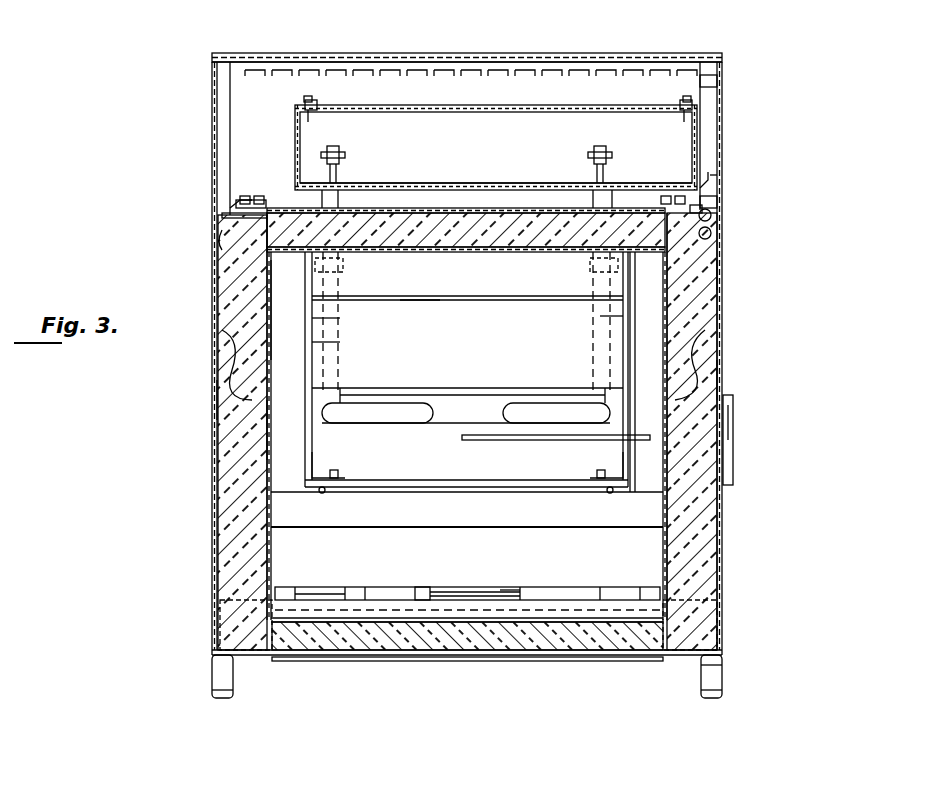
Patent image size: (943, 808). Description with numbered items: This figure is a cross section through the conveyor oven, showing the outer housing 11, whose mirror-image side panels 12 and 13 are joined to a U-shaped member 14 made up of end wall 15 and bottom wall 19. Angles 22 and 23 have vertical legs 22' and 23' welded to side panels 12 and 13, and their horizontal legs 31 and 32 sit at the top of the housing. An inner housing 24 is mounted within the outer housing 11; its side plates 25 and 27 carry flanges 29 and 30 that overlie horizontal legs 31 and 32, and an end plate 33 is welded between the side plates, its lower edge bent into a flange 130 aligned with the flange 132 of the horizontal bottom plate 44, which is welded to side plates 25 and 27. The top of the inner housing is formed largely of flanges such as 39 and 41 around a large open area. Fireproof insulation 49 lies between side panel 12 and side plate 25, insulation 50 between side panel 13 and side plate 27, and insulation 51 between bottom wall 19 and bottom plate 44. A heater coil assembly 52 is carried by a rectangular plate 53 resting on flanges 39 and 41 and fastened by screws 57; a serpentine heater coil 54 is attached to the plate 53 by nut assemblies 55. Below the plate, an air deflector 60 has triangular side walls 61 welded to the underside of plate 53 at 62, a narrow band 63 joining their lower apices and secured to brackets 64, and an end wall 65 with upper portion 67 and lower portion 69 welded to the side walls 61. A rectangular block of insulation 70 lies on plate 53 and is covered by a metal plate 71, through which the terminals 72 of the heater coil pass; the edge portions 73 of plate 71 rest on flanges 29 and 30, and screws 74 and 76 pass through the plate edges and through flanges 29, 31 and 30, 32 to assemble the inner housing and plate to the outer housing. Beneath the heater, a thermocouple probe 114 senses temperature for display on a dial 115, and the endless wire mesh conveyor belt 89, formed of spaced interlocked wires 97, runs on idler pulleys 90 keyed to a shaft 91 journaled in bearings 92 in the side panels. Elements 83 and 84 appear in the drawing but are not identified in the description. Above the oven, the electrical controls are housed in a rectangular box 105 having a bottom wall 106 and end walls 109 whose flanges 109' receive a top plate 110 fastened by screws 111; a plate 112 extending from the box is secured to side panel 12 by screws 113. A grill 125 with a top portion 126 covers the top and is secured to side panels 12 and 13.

The outer housing 11 is at (212, 98).
The side panel 12 is at (722, 515).
The side panel 13 is at (212, 489).
The U-shaped member 14 is at (236, 660).
The end wall 15 is at (226, 358).
The bottom wall 19 is at (268, 658).
The angle 22 is at (749, 226).
The vertical leg 22' is at (754, 244).
The angle 23 is at (404, 220).
The vertical leg 23' is at (182, 250).
The inner housing 24 is at (312, 344).
The side plate 25 is at (623, 315).
The side plate 27 is at (312, 318).
The flange 29 is at (722, 215).
The flange 30 is at (230, 204).
The horizontal leg 31 is at (722, 276).
The horizontal leg 32 is at (222, 232).
The end plate 33 is at (290, 427).
The flange 39 is at (647, 372).
The flange 41 is at (287, 310).
The horizontal bottom plate 44 is at (440, 586).
The insulation 49 is at (722, 372).
The insulation 50 is at (212, 398).
The insulation 51 is at (454, 640).
The heater coil assembly 52 is at (410, 425).
The rectangular plate 53 is at (432, 268).
The serpentine heater coil 54 is at (485, 406).
The nut assemblies 55 is at (348, 263).
The screws 57 is at (270, 196).
The air deflector 60 is at (440, 423).
The triangular side walls 61 is at (312, 369).
The weld 62 is at (608, 282).
The narrow band 63 is at (462, 440).
The brackets 64 is at (320, 473).
The end wall 65 is at (466, 369).
The upper portion 67 is at (402, 298).
The lower portion 69 is at (503, 307).
The rectangular block of insulation 70 is at (478, 206).
The metal plate 71 is at (436, 206).
The terminals 72 is at (346, 154).
The edge portions 73 is at (247, 196).
The screws 74 is at (722, 165).
The screws 76 is at (230, 206).
The heater support 83 is at (546, 530).
The heating element 84 is at (436, 588).
The endless wire mesh conveyor belt 89 is at (522, 588).
The idler pulleys 90 is at (310, 588).
The shaft 91 is at (350, 592).
The bearings 92 is at (218, 578).
The interlocked wires 97 is at (344, 658).
The rectangular box 105 is at (403, 103).
The bottom wall 106 is at (510, 184).
The end walls 109 is at (518, 114).
The flanges 109' is at (496, 125).
The top plate 110 is at (497, 105).
The screws 111 is at (306, 99).
The plate 112 is at (717, 135).
The screws 113 is at (722, 82).
The thermocouple probe 114 is at (544, 489).
The dial 115 is at (733, 455).
The grill 125 is at (218, 55).
The top portion 126 is at (508, 53).
The flange 130 is at (614, 526).
The flange 132 is at (488, 592).